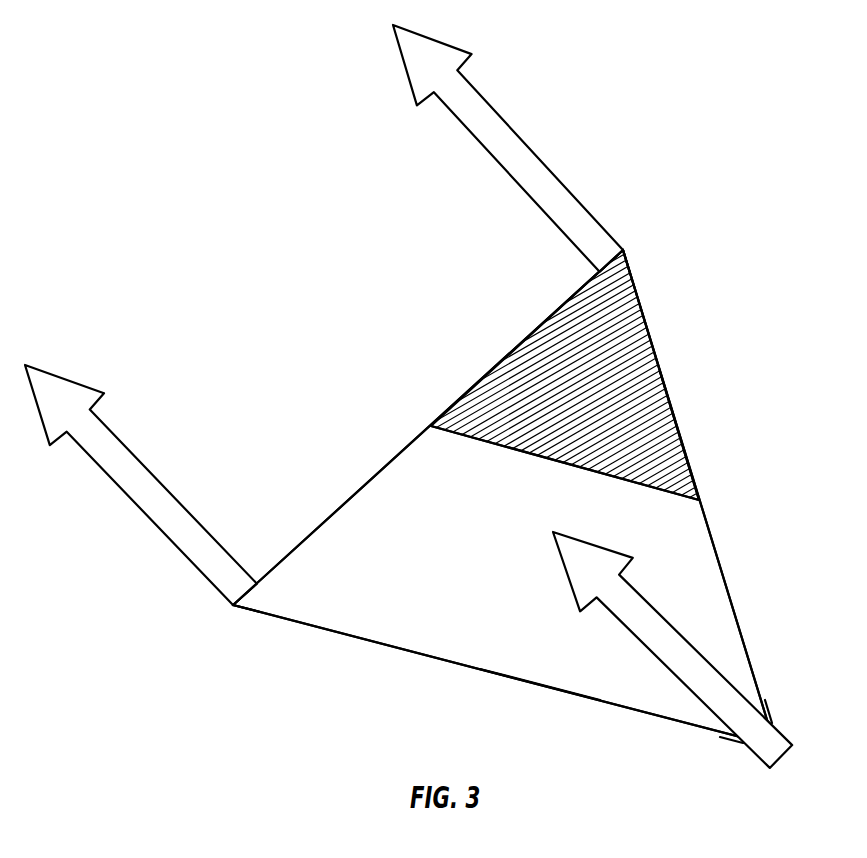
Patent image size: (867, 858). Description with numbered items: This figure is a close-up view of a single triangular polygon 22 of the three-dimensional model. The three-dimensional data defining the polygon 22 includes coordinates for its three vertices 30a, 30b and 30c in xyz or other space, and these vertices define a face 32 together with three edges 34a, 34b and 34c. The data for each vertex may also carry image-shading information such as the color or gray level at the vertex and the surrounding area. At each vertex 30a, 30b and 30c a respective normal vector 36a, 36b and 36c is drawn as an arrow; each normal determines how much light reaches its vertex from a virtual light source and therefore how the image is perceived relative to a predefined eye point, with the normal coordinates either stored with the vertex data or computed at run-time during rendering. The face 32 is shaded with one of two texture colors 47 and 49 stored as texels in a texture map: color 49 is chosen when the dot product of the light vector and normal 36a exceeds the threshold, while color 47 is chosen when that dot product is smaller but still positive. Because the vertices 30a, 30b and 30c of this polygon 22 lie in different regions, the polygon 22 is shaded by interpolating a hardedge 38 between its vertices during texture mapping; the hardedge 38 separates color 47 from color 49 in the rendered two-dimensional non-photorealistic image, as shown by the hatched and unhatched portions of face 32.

The triangular polygon 22 is at (224, 702).
The vertex 30a is at (623, 249).
The vertex 30b is at (786, 740).
The vertex 30c is at (235, 607).
The face 32 is at (690, 518).
The edge 34a is at (488, 372).
The edge 34b is at (681, 431).
The edge 34c is at (372, 643).
The normal vector 36a is at (512, 142).
The normal vector 36b is at (653, 625).
The normal vector 36c is at (137, 477).
The hardedge 38 is at (470, 438).
The color 47 is at (655, 340).
The color 49 is at (542, 667).